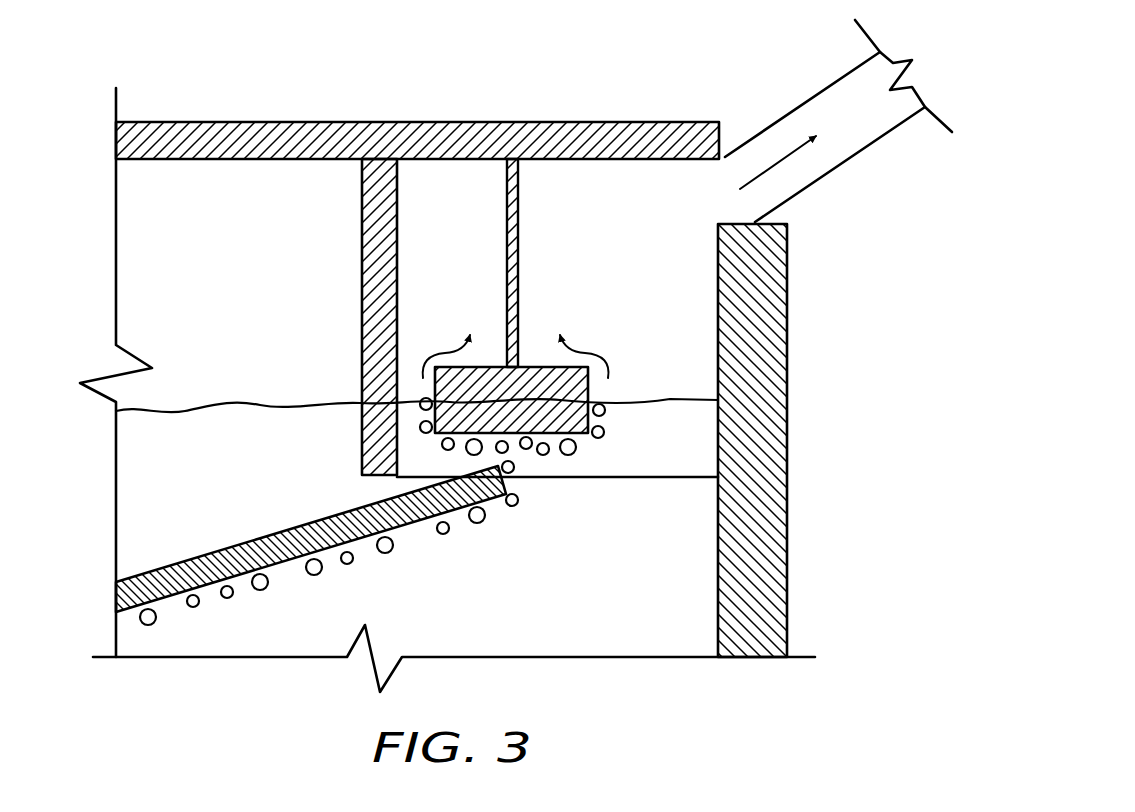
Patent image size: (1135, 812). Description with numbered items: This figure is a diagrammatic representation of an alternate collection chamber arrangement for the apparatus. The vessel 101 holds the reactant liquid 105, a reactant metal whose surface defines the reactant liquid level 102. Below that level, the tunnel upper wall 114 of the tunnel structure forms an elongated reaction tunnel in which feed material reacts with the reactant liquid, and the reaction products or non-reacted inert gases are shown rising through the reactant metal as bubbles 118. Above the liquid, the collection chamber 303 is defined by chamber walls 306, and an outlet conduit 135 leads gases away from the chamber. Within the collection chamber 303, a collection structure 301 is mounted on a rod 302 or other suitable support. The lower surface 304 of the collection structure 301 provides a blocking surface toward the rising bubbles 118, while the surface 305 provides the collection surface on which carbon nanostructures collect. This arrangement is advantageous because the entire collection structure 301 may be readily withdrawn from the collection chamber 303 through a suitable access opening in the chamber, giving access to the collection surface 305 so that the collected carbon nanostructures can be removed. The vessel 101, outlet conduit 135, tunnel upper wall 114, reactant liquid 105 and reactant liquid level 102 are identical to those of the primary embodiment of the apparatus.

The vessel 101 is at (786, 612).
The reactant liquid level 102 is at (227, 402).
The reactant liquid 105 is at (188, 462).
The tunnel upper wall 114 is at (208, 552).
The bubbles 118 is at (476, 524).
The outlet conduit 135 is at (800, 100).
The collection structure 301 is at (535, 318).
The rod 302 is at (520, 218).
The collection chamber 303 is at (438, 198).
The lower surface 304 is at (510, 434).
The collection surface 305 is at (448, 363).
The chamber walls 306 is at (663, 123).